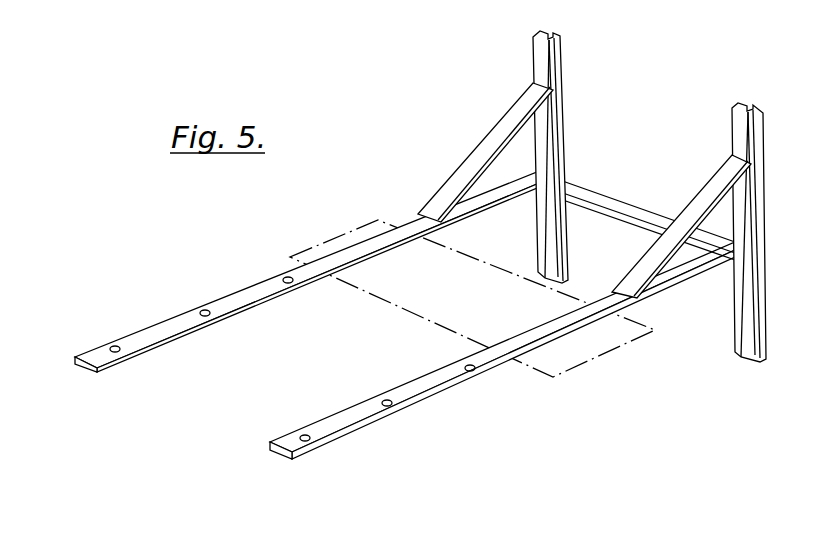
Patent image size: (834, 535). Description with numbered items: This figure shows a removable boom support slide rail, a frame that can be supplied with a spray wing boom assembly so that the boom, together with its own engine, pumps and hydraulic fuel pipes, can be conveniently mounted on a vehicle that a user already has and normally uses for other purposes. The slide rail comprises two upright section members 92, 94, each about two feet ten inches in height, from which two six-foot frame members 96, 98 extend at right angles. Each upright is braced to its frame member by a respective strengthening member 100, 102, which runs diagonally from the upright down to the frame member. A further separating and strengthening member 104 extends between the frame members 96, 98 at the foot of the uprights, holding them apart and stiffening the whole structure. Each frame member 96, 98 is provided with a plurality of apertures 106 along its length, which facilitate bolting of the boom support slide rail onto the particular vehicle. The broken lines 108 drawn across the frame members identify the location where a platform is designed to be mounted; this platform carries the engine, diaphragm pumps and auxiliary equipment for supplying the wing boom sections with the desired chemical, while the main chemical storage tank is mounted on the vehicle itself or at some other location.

The upright section member 92 is at (563, 73).
The upright section member 94 is at (764, 150).
The frame member 96 is at (227, 300).
The frame member 98 is at (430, 387).
The strengthening member 100 is at (498, 131).
The strengthening member 102 is at (720, 172).
The separating and strengthening member 104 is at (613, 202).
The apertures 106 is at (112, 345).
The broken lines 108 is at (472, 298).